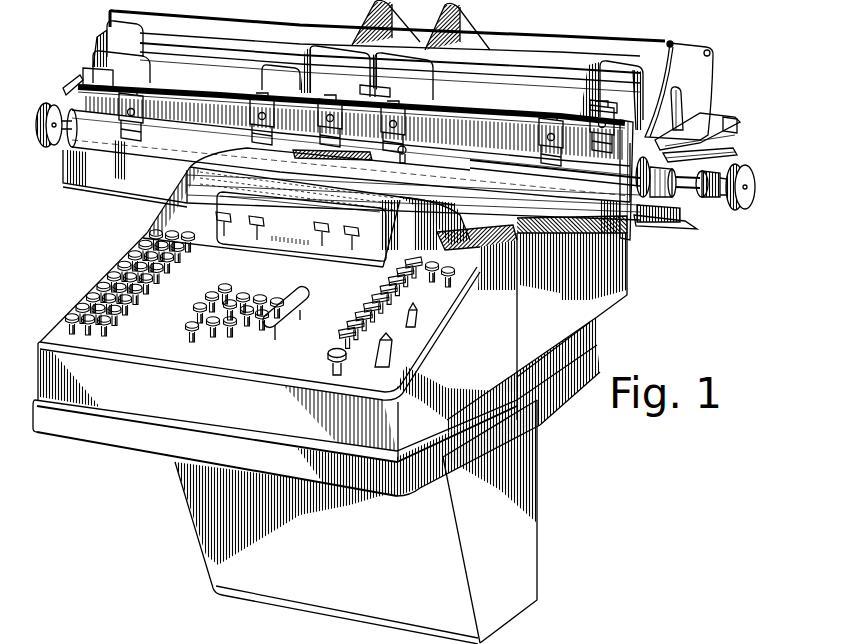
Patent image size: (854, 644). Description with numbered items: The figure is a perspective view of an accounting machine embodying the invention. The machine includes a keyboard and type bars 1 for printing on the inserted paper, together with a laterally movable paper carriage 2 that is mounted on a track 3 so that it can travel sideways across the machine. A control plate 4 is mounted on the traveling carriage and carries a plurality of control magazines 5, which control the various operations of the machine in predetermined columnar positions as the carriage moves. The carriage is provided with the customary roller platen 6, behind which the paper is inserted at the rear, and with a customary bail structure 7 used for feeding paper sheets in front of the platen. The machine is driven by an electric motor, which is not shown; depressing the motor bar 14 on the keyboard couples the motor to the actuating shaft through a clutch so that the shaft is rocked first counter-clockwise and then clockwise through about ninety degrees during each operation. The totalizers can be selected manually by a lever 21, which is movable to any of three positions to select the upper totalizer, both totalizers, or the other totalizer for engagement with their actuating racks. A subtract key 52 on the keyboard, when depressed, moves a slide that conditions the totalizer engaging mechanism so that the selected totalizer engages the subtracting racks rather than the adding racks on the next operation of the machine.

The type bars 1 is at (343, 158).
The paper carriage 2 is at (72, 100).
The track 3 is at (728, 160).
The control plate 4 is at (737, 135).
The control magazines 5 is at (728, 123).
The roller platen 6 is at (506, 165).
The bail structure 7 is at (487, 123).
The motor bar 14 is at (311, 298).
The lever 21 is at (377, 350).
The subtract key 52 is at (340, 345).